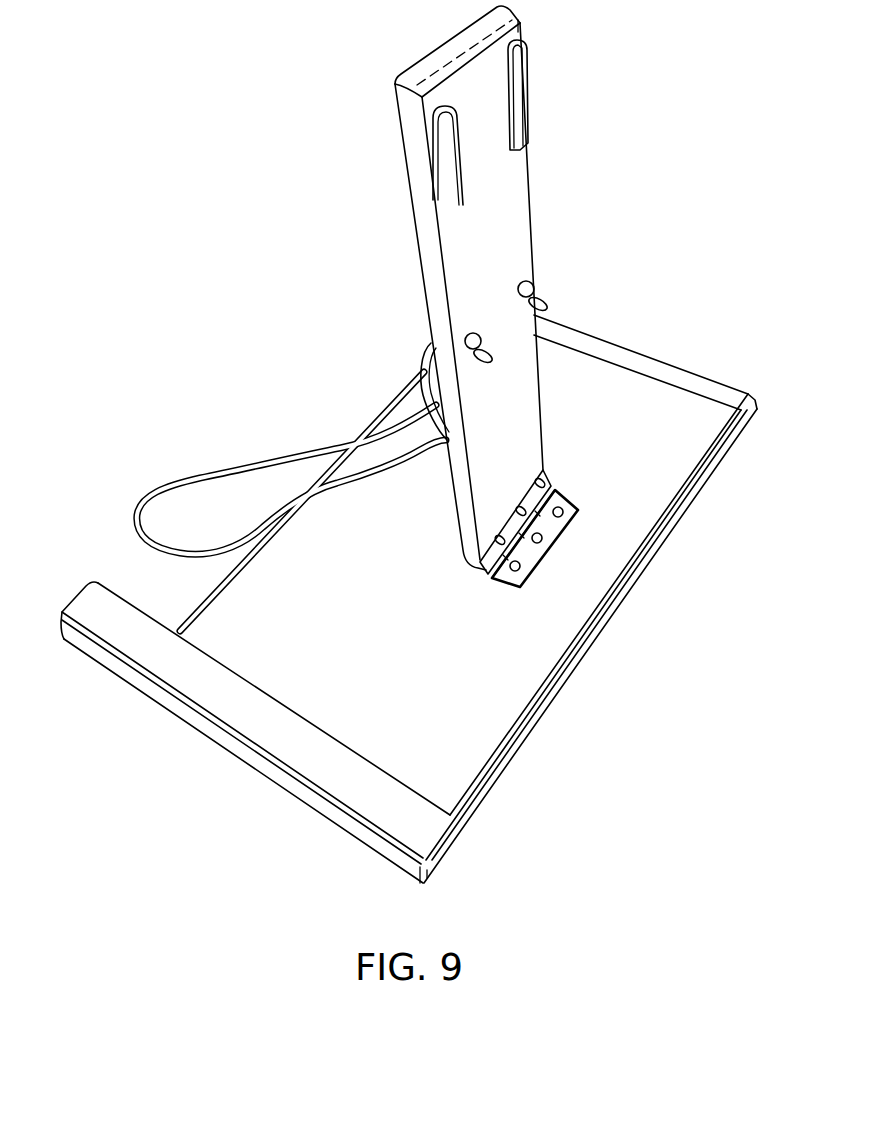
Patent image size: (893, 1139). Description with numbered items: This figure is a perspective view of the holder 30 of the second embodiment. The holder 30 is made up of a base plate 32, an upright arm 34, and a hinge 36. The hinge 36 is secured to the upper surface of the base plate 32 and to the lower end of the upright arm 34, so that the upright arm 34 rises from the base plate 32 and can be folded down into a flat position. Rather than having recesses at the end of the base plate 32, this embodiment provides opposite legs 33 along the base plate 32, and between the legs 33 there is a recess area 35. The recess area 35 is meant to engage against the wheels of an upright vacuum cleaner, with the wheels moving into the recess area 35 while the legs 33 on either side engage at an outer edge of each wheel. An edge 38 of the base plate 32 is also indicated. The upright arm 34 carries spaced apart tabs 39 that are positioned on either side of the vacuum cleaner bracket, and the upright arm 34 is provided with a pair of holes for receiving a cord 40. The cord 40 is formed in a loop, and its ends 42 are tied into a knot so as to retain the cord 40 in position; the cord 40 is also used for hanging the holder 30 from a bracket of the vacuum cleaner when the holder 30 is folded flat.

The holder 30 is at (404, 444).
The base plate 32 is at (398, 644).
The legs 33 is at (97, 590).
The upright arm 34 is at (500, 240).
The recess area 35 is at (384, 402).
The hinge 36 is at (550, 528).
The base edge 38 is at (550, 708).
The tabs 39 is at (458, 175).
The cord 40 is at (220, 474).
The ends 42 is at (494, 357).